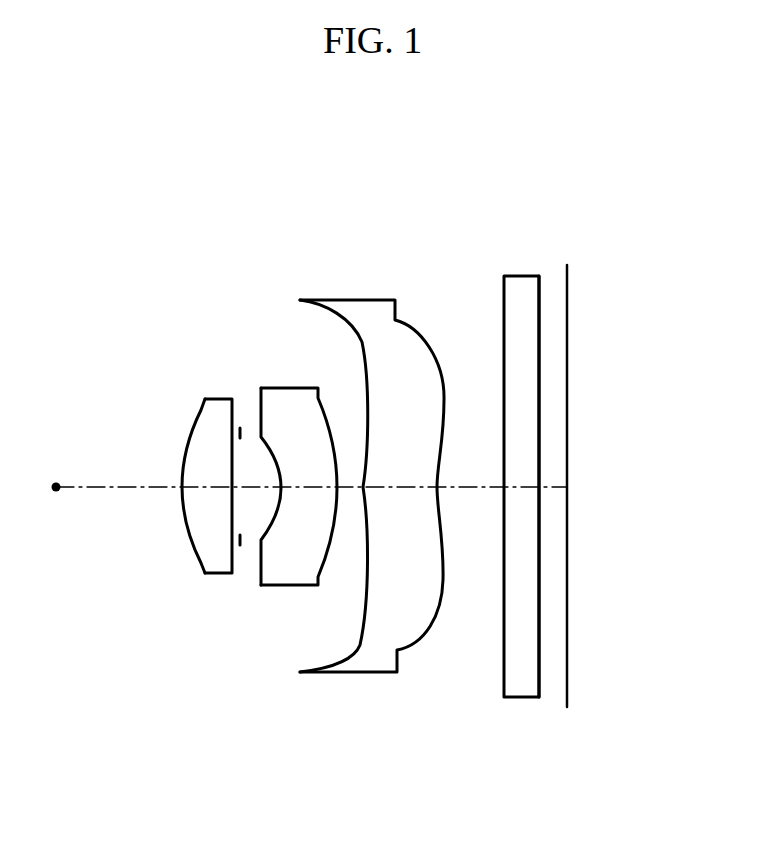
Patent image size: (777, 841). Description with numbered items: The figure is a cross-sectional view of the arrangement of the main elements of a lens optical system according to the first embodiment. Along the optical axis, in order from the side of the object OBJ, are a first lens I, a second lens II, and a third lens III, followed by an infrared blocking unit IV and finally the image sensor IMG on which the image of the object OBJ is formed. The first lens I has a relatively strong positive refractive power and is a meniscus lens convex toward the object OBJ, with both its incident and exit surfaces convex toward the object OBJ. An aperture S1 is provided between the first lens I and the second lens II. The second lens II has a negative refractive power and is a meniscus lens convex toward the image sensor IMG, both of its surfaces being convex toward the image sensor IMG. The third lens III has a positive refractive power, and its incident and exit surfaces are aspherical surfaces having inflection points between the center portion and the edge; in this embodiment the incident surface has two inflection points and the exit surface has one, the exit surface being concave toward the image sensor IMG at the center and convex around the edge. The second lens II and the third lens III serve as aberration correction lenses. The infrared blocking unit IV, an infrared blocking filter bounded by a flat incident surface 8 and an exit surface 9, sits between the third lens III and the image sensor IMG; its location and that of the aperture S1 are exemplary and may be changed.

The object OBJ is at (56, 482).
The image sensor IMG is at (567, 277).
The first lens I is at (192, 501).
The second lens II is at (299, 500).
The third lens III is at (372, 504).
The infrared blocking unit IV is at (514, 506).
The aperture S1 is at (241, 427).
The incident surface of the infrared blocking unit 8 is at (504, 313).
The exit surface of the infrared blocking unit 9 is at (539, 300).